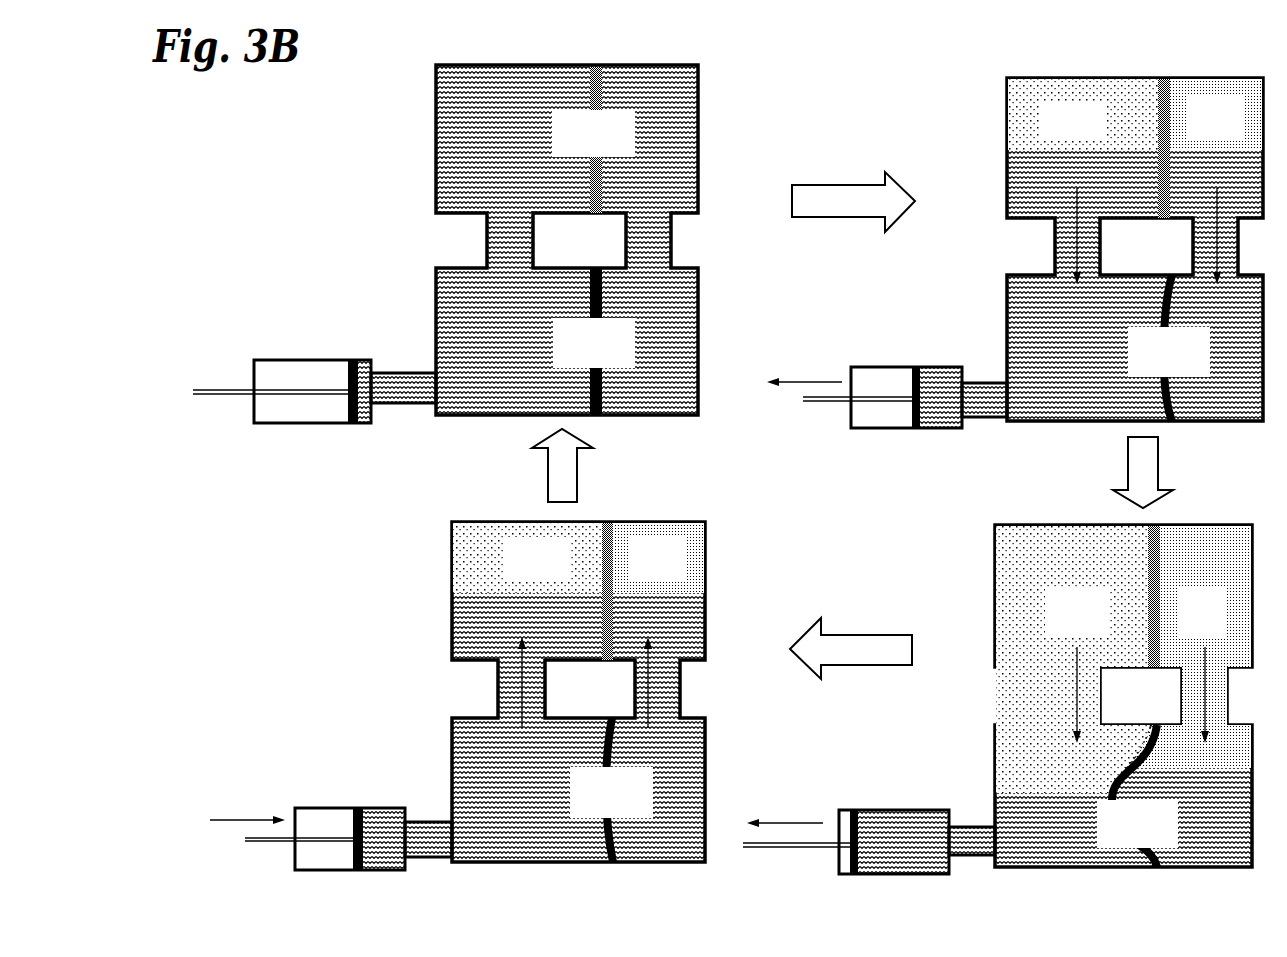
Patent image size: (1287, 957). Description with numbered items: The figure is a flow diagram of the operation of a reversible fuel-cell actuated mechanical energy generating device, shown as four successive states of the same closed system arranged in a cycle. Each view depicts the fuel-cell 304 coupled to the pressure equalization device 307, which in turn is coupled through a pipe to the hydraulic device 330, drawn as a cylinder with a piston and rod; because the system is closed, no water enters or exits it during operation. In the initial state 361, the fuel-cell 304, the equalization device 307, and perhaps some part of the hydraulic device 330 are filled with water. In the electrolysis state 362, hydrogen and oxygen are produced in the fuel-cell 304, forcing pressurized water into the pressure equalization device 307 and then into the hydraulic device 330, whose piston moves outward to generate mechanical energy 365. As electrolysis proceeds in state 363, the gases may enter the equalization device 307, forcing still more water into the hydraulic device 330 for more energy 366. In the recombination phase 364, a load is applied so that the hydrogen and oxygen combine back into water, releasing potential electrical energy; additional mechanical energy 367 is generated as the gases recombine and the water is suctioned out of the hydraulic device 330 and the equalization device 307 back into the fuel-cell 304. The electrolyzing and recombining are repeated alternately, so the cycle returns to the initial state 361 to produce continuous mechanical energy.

The fuel-cell 304 is at (436, 163).
The pressure equalization device 307 is at (650, 415).
The hydraulic device 330 is at (272, 423).
The initial state 361 is at (657, 65).
The electrolysis state 362 is at (1133, 78).
The state 363 is at (1075, 526).
The recombination phase 364 is at (518, 522).
The mechanical energy 365 is at (797, 380).
The energy 366 is at (792, 820).
The additional mechanical energy 367 is at (243, 815).